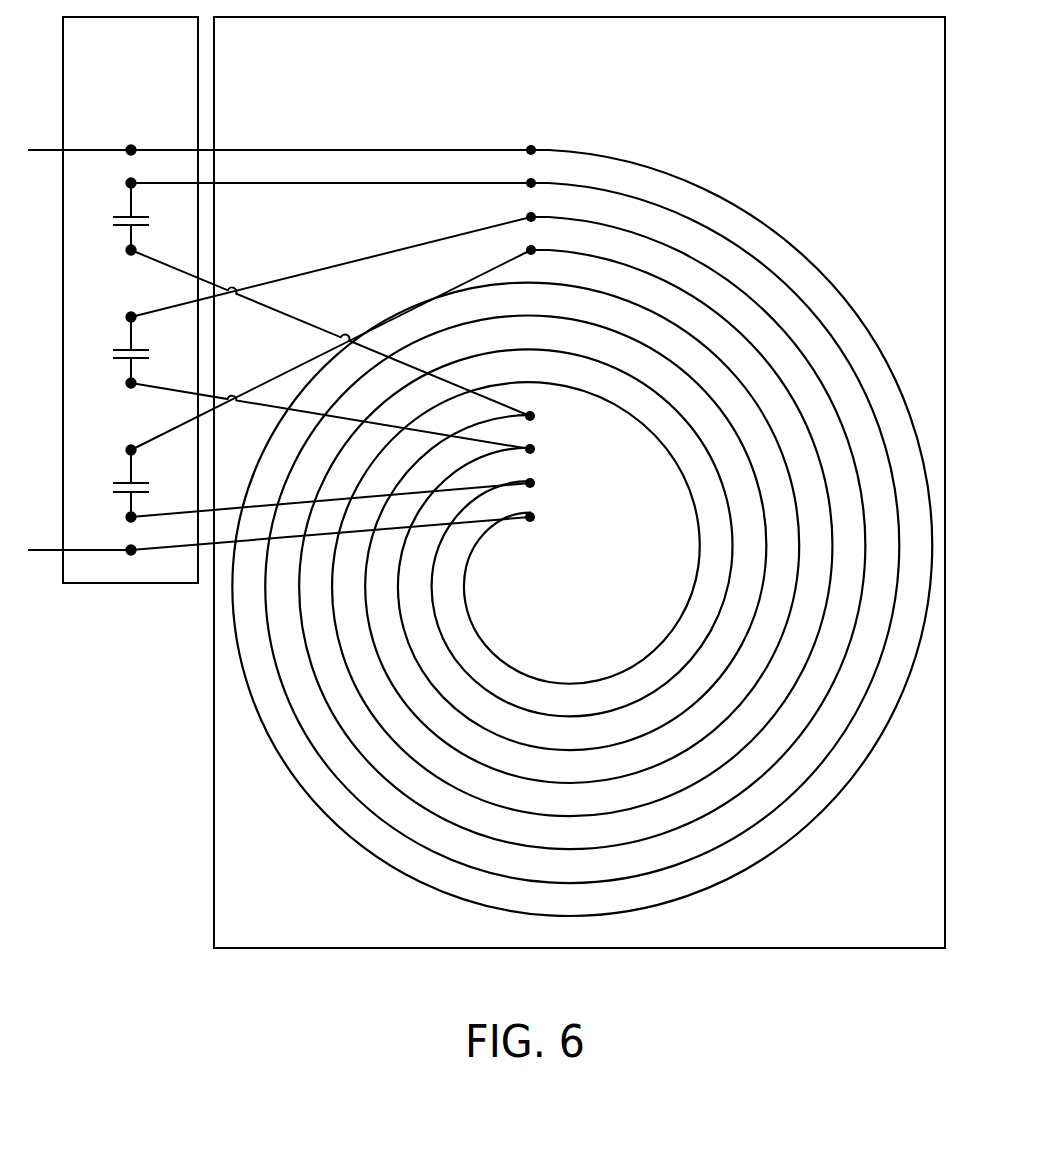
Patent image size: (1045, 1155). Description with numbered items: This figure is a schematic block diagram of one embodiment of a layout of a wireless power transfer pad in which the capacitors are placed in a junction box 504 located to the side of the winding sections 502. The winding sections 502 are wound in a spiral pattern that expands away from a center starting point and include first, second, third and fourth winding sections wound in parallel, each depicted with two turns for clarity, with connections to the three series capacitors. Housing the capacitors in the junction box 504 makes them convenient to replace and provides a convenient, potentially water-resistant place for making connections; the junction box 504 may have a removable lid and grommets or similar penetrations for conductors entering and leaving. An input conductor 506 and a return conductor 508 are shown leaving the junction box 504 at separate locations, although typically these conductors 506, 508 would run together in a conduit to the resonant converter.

The winding sections 502 is at (579, 482).
The junction box 504 is at (113, 99).
The input conductor 506 is at (105, 150).
The return conductor 508 is at (93, 550).